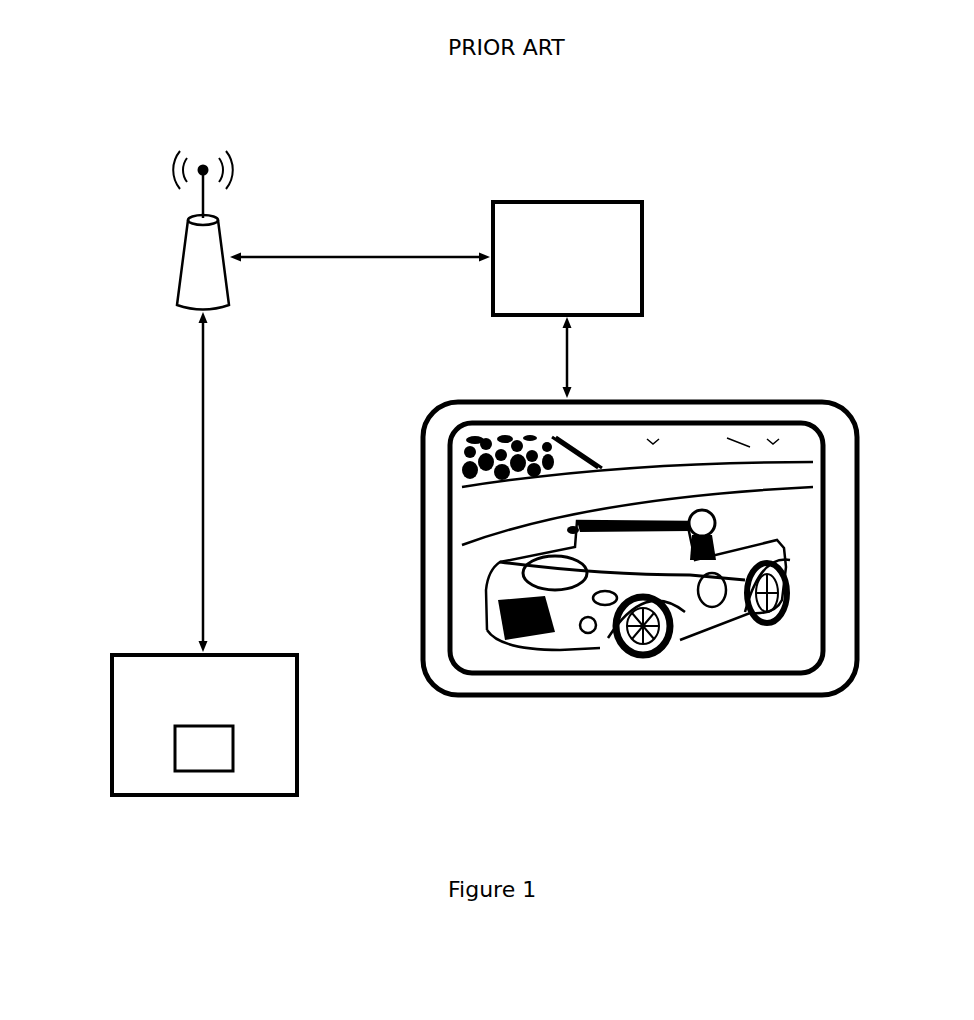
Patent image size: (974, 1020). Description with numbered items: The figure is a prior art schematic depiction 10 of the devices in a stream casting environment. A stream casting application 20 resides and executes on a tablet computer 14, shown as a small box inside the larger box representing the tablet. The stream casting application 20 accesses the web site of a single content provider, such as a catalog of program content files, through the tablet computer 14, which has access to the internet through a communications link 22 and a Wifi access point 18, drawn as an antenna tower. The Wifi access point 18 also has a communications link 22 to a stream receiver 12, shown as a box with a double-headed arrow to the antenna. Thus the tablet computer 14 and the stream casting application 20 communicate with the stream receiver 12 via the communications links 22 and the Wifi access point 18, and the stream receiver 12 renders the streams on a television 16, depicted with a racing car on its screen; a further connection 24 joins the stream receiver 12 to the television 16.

The stream casting environment depiction 10 is at (836, 119).
The stream receiver 12 is at (572, 185).
The tablet computer 14 is at (246, 640).
The television 16 is at (773, 380).
The Wifi access point 18 is at (238, 150).
The stream casting application 20 is at (210, 790).
The communications link 22 is at (298, 240).
The communication link 24 is at (581, 358).